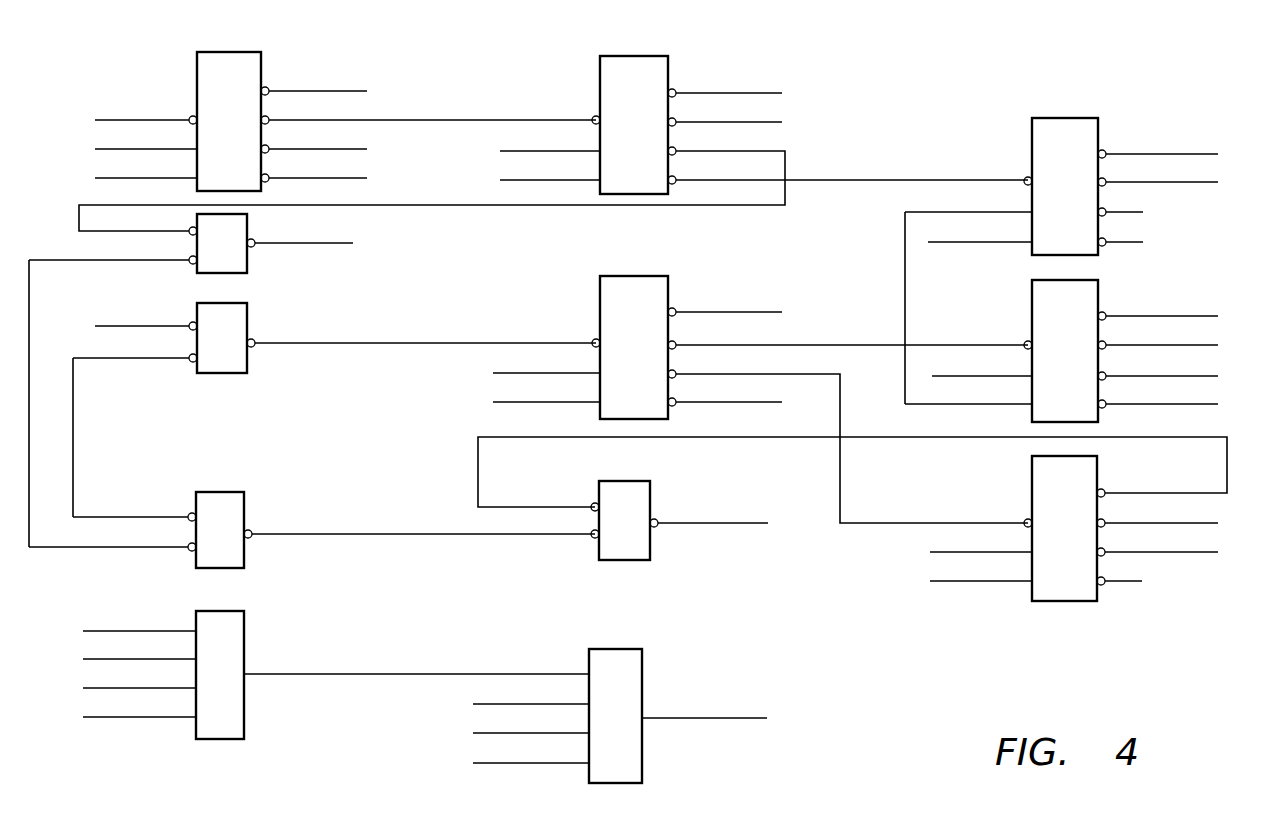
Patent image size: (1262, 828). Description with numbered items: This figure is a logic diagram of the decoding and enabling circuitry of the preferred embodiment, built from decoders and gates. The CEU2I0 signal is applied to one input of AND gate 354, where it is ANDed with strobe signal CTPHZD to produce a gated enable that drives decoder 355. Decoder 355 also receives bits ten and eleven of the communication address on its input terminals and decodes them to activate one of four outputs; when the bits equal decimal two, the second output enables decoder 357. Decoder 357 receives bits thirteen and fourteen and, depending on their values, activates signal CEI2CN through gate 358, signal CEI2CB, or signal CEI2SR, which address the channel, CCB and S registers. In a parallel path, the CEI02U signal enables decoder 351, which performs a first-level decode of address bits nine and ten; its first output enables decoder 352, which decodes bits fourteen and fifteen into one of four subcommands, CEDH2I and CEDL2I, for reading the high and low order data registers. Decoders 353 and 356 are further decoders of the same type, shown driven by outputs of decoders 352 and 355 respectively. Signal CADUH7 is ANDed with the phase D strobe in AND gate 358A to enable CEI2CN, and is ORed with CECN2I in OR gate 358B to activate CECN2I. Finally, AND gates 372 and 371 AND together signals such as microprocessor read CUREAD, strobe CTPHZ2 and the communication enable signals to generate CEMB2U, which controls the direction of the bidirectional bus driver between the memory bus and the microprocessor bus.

The decoder 351 is at (234, 52).
The decoder 352 is at (627, 56).
The decoder 353 is at (1072, 118).
The AND gate 354 is at (247, 305).
The decoder 355 is at (600, 291).
The decoder 356 is at (1032, 295).
The decoder 357 is at (1032, 468).
The NOR gate 358 is at (645, 481).
The AND gate 358A is at (215, 492).
The OR gate 358B is at (247, 258).
The AND gate 371 is at (612, 649).
The AND gate 372 is at (235, 611).